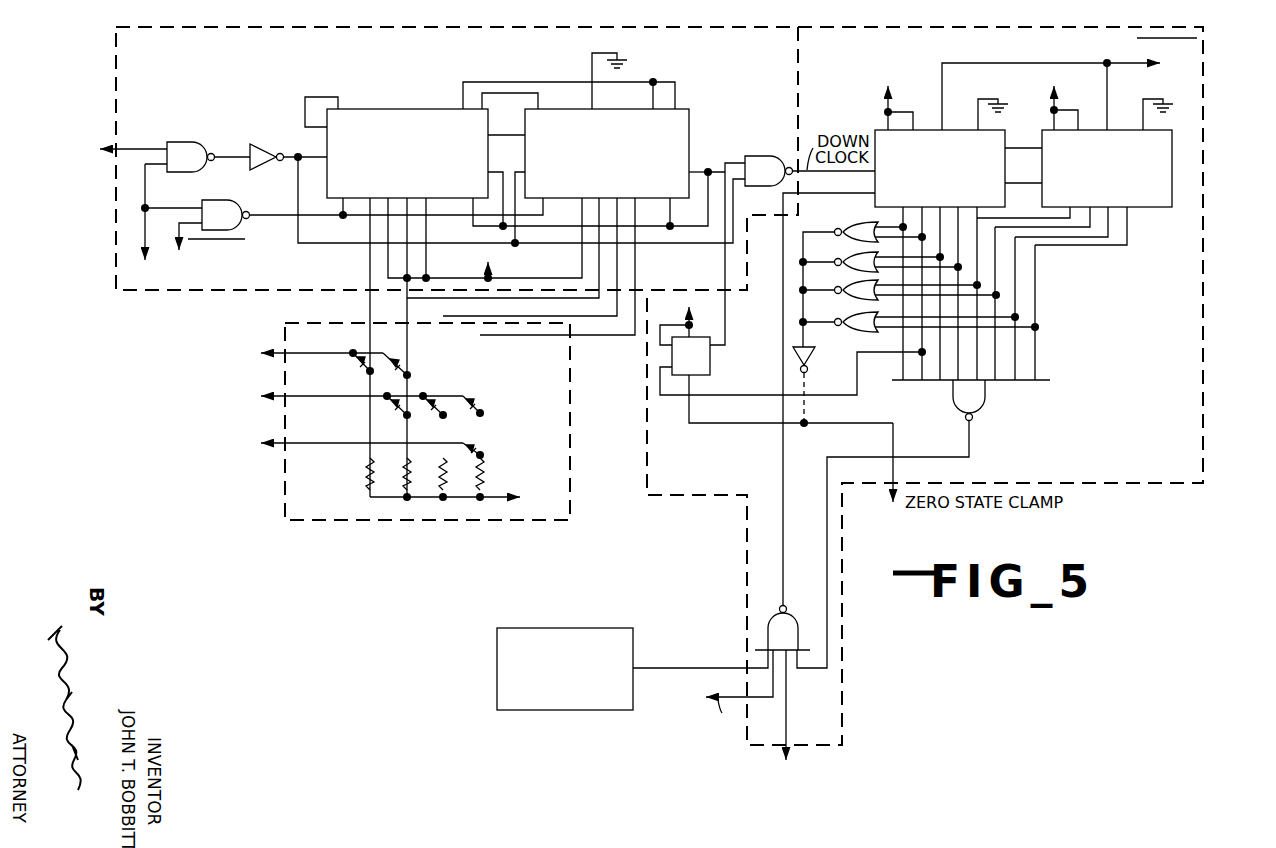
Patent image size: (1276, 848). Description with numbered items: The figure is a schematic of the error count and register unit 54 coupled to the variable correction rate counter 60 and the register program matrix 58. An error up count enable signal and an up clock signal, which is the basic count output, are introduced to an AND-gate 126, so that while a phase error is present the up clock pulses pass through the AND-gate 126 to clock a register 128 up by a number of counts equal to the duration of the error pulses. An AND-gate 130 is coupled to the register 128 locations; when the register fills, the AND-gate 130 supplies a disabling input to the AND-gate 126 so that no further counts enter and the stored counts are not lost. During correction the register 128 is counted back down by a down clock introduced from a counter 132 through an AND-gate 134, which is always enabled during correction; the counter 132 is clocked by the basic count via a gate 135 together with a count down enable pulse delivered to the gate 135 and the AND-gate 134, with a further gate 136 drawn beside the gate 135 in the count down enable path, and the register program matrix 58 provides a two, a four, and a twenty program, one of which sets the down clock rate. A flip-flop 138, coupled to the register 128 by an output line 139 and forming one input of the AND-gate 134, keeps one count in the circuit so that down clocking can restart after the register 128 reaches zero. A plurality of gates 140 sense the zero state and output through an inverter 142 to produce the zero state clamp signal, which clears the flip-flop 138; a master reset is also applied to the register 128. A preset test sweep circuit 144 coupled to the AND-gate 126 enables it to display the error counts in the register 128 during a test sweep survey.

The error count and register unit 54 is at (1201, 407).
The register program matrix 58 is at (288, 485).
The variable correction rate counter 60 is at (118, 253).
The AND-gate 126 is at (792, 637).
The register 128 is at (1025, 100).
The AND-gate 130 is at (985, 400).
The counter 132 is at (514, 90).
The AND-gate 134 is at (762, 154).
The gate 135 is at (180, 143).
The NAND gate (count down enable) 136 is at (217, 188).
The flip-flop 138 is at (710, 360).
The output line 139 is at (677, 397).
The gates 140 is at (834, 305).
The inverter 142 is at (809, 370).
The preset test sweep circuit 144 is at (563, 618).